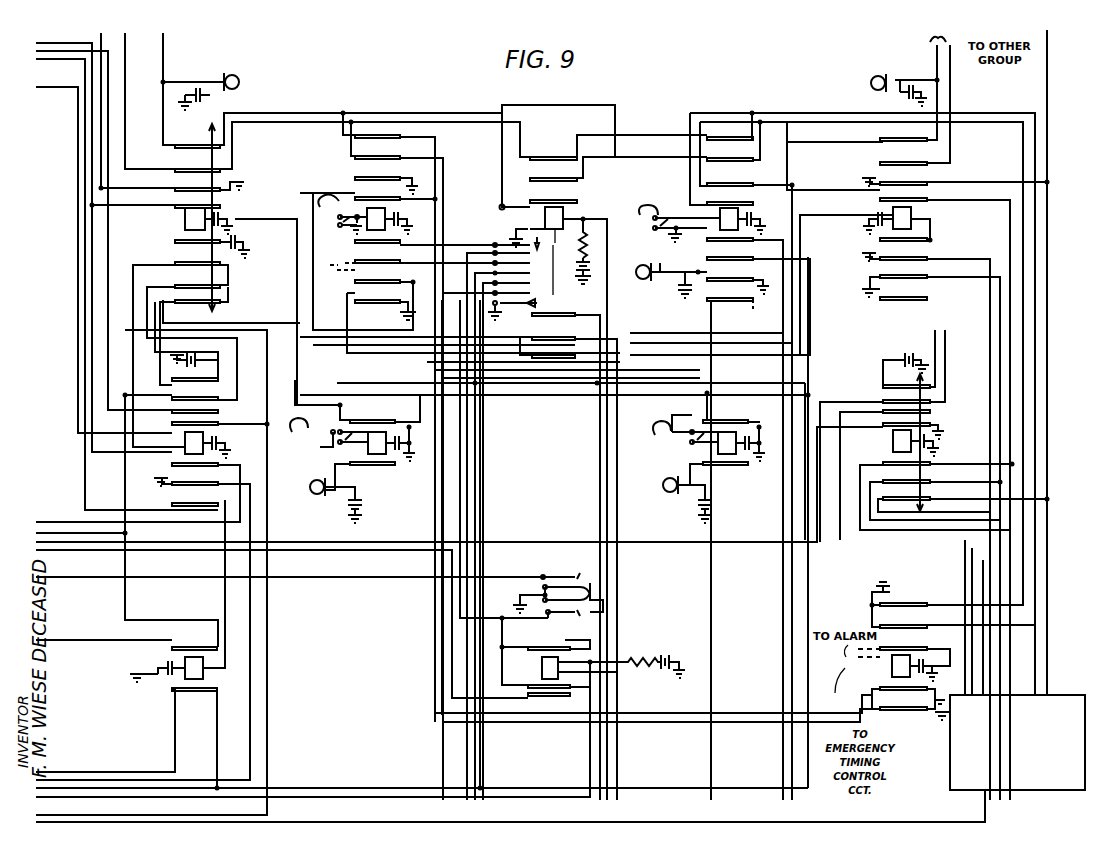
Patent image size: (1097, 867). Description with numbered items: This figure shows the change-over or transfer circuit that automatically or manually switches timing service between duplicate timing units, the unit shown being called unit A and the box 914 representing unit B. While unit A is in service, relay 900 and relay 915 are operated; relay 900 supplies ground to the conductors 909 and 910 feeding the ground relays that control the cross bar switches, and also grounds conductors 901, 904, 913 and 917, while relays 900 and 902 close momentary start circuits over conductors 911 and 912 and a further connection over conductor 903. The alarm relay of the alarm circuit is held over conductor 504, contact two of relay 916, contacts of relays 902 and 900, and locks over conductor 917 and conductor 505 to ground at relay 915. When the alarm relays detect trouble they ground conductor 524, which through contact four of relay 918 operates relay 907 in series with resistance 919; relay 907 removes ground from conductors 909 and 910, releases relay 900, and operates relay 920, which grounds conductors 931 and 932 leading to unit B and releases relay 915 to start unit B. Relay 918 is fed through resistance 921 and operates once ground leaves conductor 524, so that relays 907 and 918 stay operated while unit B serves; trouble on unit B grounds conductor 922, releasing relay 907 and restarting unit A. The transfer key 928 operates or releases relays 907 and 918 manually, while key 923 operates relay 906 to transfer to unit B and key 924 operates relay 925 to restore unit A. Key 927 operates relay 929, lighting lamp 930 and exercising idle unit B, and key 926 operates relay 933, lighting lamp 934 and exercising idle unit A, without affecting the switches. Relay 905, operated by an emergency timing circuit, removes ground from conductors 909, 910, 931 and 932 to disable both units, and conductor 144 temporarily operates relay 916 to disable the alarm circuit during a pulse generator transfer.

The conductor 144 is at (318, 578).
The conductor 504 is at (100, 644).
The conductor 505 is at (185, 551).
The conductor 524 is at (93, 550).
The relay 900 is at (225, 218).
The conductor 901 is at (102, 113).
The relay 902 is at (206, 432).
The conductor 903 is at (175, 526).
The conductor 904 is at (90, 263).
The relay 905 is at (901, 655).
The relay 906 is at (728, 208).
The relay 907 is at (545, 230).
The conductor 909 is at (126, 62).
The conductor 910 is at (165, 63).
The conductor 911 is at (83, 64).
The conductor 912 is at (77, 100).
The conductor 913 is at (268, 690).
The unit B 914 is at (950, 758).
The relay 915 is at (892, 442).
The relay 916 is at (198, 680).
The conductor 917 is at (62, 524).
The relay 918 is at (548, 680).
The resistance 919 is at (580, 248).
The relay 920 is at (913, 213).
The resistance 921 is at (638, 658).
The conductor 922 is at (554, 798).
The key 923 is at (644, 222).
The key 924 is at (330, 224).
The relay 925 is at (362, 212).
The key 926 is at (296, 440).
The key 927 is at (663, 432).
The transfer key 928 is at (603, 600).
The relay 929 is at (728, 432).
The lamp 930 is at (672, 493).
The conductor 931 is at (942, 94).
The conductor 932 is at (944, 70).
The relay 933 is at (381, 455).
The lamp 934 is at (318, 496).